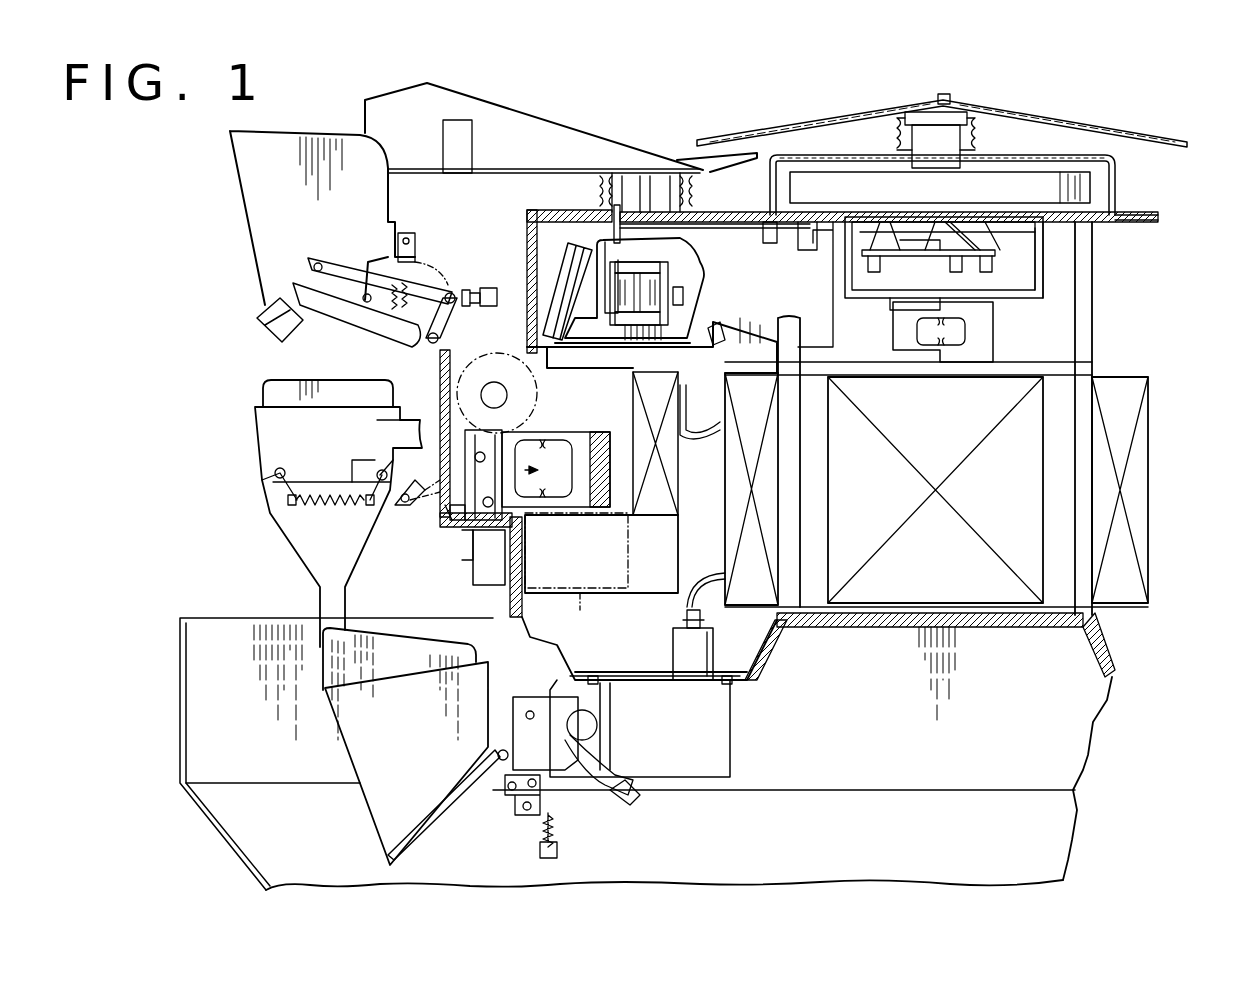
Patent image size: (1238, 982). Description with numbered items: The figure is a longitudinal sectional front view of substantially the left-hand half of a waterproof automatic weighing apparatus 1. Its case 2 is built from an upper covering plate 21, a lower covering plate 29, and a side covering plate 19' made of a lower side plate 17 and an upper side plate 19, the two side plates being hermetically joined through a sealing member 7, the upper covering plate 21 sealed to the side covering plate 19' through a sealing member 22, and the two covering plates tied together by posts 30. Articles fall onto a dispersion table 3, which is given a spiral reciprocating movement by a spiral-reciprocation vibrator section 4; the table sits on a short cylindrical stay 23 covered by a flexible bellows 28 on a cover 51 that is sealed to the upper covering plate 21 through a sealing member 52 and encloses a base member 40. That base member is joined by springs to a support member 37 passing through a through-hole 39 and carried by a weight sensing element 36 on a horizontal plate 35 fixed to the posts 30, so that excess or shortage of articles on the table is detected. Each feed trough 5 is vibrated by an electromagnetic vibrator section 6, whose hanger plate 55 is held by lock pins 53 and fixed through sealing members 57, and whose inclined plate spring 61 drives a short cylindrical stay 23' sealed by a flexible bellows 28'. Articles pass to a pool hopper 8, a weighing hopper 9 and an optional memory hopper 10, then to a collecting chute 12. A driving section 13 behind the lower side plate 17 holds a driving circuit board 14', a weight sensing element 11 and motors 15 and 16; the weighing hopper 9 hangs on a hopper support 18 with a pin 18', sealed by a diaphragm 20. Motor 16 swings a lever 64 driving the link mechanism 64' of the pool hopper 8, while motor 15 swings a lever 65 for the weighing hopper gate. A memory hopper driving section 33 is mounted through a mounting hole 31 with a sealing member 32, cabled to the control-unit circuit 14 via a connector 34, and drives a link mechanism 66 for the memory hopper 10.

The automatic weighing apparatus 1 is at (834, 101).
The case 2 is at (897, 630).
The dispersion table 3 is at (990, 120).
The spiral-reciprocation vibrator section 4 is at (907, 263).
The feed trough 5 is at (520, 118).
The electromagnetic vibrator section 6 is at (749, 337).
The sealing member 7 is at (478, 322).
The pool hopper 8 is at (250, 185).
The weighing hopper 9 is at (263, 423).
The memory hopper 10 is at (382, 808).
The weight sensing element 11 is at (576, 550).
The collecting chute 12 is at (240, 862).
The driving section 13 is at (660, 538).
The control-unit circuit 14 is at (960, 489).
The driving circuit board 14' is at (679, 489).
The electric motor 15 is at (530, 388).
The electric motor 16 is at (585, 598).
The lower side plate 17 is at (495, 590).
The hopper support 18 is at (451, 501).
The pin 18' is at (428, 555).
The upper side plate 19 is at (526, 402).
The side covering plate 19' is at (371, 462).
The diaphragm 20 is at (447, 530).
The upper covering plate 21 is at (720, 222).
The sealing member 22 is at (565, 215).
The short cylindrical stay 23 is at (953, 118).
The short cylindrical stay 23' is at (670, 161).
The flexible bellows 28 is at (1018, 198).
The flexible bellows 28' is at (629, 152).
The lower covering plate 29 is at (995, 627).
The post 30 is at (1092, 345).
The mounting hole 31 is at (630, 675).
The sealing member 32 is at (592, 678).
The driving section 33 is at (680, 765).
The connector 34 is at (722, 658).
The horizontal plate 35 is at (975, 382).
The weight sensing element 36 is at (993, 335).
The support member 37 is at (1040, 252).
The through-hole 39 is at (805, 250).
The base member 40 is at (1090, 188).
The cover 51 is at (1085, 155).
The sealing member 52 is at (1130, 210).
The lock pin 53 is at (635, 180).
The hanger plate 55 is at (710, 232).
The sealing member 57 is at (768, 245).
The inclined plate spring 61 is at (565, 250).
The lever 64 is at (451, 290).
The link mechanism 64' is at (354, 310).
The lever 65 is at (520, 425).
The link mechanism 66 is at (521, 821).